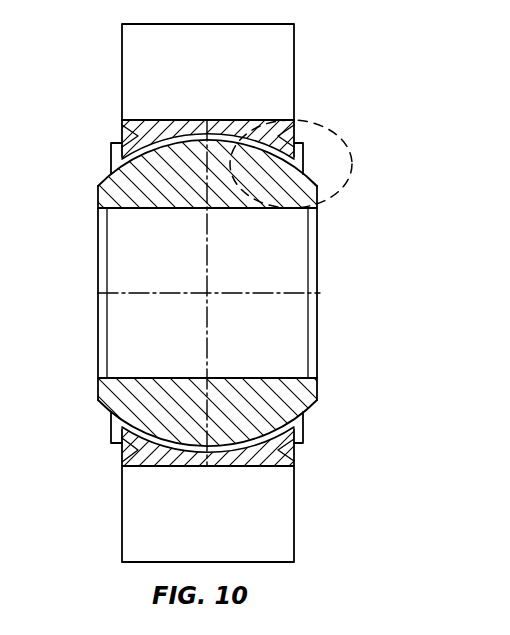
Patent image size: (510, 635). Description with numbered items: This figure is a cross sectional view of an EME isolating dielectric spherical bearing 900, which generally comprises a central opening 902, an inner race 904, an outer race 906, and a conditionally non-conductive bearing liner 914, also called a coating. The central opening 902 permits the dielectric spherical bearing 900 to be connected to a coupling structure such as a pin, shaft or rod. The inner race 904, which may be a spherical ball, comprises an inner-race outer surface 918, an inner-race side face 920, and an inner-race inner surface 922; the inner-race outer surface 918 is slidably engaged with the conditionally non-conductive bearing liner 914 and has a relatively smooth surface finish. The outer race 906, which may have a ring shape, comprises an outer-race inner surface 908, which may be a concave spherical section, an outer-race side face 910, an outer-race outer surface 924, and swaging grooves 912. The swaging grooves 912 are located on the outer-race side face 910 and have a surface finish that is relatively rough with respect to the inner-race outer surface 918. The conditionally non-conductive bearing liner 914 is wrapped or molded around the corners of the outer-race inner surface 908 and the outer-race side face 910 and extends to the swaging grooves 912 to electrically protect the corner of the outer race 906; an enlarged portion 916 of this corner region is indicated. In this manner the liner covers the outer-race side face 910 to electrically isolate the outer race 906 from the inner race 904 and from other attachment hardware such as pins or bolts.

The dielectric spherical bearing 900 is at (99, 32).
The central opening 902 is at (128, 265).
The inner race 904 is at (222, 200).
The outer race 906 is at (138, 135).
The outer-race inner surface 908 is at (133, 143).
The outer-race side face 910 is at (122, 147).
The swaging grooves 912 is at (290, 137).
The conditionally non-conductive bearing liner 914 is at (110, 210).
The portion 916 is at (352, 162).
The inner-race outer surface 918 is at (97, 178).
The inner-race side face 920 is at (317, 393).
The inner-race inner surface 922 is at (147, 377).
The outer-race outer surface 924 is at (128, 460).